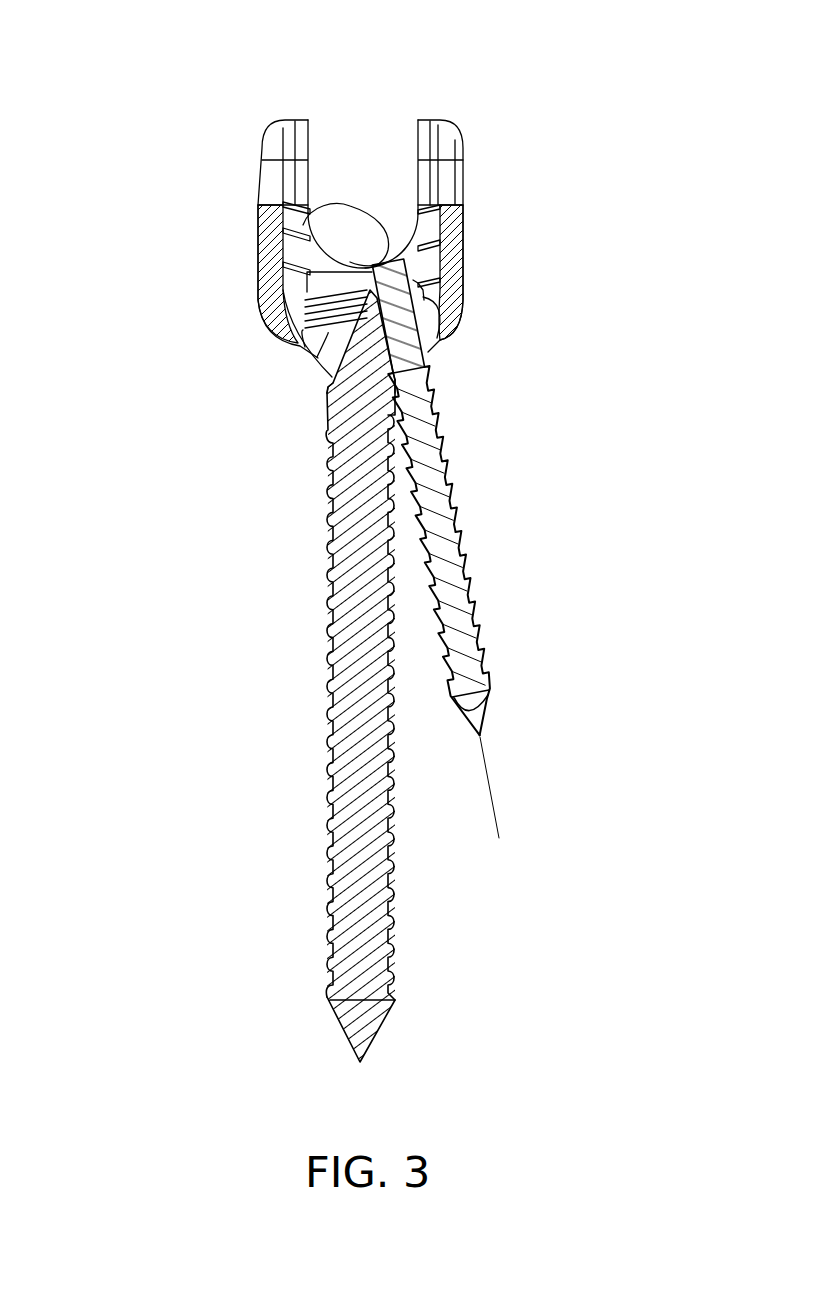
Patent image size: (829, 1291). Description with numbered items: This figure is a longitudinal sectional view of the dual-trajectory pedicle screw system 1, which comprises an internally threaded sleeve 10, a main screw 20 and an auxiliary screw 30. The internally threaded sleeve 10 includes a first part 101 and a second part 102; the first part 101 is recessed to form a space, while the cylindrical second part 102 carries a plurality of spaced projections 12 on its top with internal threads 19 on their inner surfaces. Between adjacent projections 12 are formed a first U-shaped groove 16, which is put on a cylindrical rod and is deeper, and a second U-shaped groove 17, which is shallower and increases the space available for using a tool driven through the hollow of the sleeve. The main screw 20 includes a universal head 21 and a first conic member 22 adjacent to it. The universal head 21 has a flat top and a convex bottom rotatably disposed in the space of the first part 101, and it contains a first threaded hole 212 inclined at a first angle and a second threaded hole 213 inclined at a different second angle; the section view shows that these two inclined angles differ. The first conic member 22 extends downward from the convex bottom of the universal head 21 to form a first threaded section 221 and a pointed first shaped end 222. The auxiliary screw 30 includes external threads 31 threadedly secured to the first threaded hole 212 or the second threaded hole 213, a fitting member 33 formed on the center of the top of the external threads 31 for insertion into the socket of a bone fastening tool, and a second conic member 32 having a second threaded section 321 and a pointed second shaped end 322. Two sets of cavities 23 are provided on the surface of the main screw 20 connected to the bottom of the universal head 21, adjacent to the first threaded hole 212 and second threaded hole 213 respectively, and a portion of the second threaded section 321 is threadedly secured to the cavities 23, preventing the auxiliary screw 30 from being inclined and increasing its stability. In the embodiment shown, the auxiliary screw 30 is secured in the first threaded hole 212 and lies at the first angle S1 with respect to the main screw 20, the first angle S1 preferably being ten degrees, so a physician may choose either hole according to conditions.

The dual-trajectory pedicle screw system 1 is at (70, 33).
The internally threaded sleeve 10 is at (486, 173).
The projections 12 is at (450, 127).
The first U-shaped groove 16 is at (360, 177).
The second U-shaped groove 17 is at (278, 157).
The internal threads 19 is at (435, 224).
The fitting member 33 is at (306, 210).
The second part 102 is at (260, 222).
The universal head 21 is at (300, 258).
The first threaded hole 212 is at (435, 266).
The external threads 31 is at (422, 286).
The first part 101 is at (293, 333).
The second conic member 32 is at (432, 361).
The second threaded hole 213 is at (318, 367).
The cavities 23 is at (398, 382).
The first conic member 22 is at (327, 420).
The auxiliary screw 30 is at (480, 505).
The second threaded section 321 is at (463, 553).
The main screw 20 is at (305, 620).
The first threaded section 221 is at (333, 713).
The second shaped end 322 is at (497, 703).
The first angle S1 is at (497, 833).
The first shaped end 222 is at (347, 1033).